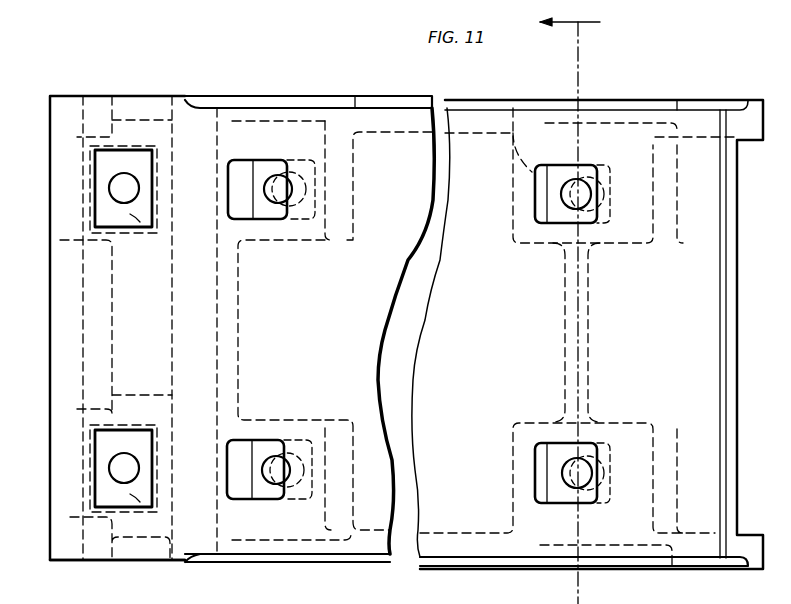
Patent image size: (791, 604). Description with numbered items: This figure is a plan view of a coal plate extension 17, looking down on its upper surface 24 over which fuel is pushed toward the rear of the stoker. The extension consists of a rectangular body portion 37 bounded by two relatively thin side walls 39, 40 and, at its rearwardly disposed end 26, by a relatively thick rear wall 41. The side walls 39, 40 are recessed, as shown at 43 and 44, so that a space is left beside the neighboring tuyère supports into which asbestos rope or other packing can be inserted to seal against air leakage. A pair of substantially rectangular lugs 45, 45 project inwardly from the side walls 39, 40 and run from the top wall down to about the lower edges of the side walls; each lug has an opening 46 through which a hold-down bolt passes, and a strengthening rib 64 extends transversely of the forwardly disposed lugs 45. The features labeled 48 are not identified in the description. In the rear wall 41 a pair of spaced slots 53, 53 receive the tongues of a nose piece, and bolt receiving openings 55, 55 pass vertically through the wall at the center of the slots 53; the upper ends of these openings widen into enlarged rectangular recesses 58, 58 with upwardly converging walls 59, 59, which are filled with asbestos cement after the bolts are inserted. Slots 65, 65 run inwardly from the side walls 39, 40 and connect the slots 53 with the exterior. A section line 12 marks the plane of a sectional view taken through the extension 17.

The section line 12 is at (558, 308).
The coal plate extension 17 is at (700, 106).
The upper surface 24 is at (289, 330).
The rearwardly disposed end 26 is at (50, 462).
The rectangular body portion 37 is at (445, 566).
The side wall 39 is at (400, 98).
The side wall 40 is at (360, 566).
The rear wall 41 is at (178, 104).
The recess 43 is at (470, 104).
The recess 44 is at (420, 575).
The lug 45 is at (325, 128).
The opening 46 is at (279, 182).
The mounting block 48 is at (262, 175).
The slot 53 is at (80, 240).
The bolt receiving opening 55 is at (120, 196).
The enlarged rectangular recess 58 is at (108, 167).
The upwardly converging wall 59 is at (121, 355).
The strengthening rib 64 is at (592, 350).
The slot 65 is at (133, 110).